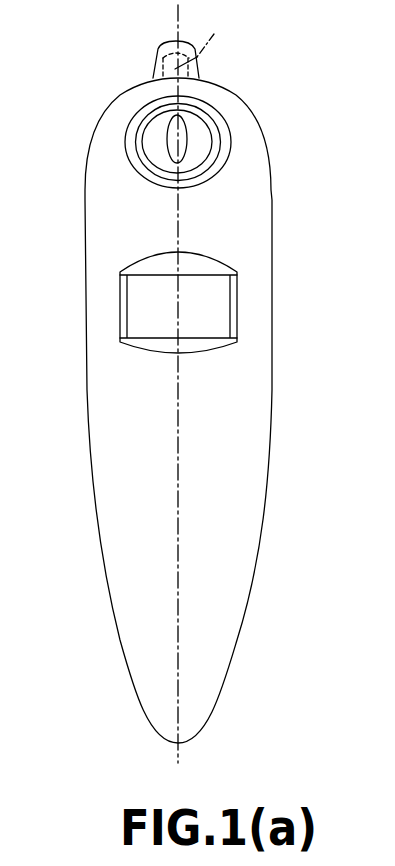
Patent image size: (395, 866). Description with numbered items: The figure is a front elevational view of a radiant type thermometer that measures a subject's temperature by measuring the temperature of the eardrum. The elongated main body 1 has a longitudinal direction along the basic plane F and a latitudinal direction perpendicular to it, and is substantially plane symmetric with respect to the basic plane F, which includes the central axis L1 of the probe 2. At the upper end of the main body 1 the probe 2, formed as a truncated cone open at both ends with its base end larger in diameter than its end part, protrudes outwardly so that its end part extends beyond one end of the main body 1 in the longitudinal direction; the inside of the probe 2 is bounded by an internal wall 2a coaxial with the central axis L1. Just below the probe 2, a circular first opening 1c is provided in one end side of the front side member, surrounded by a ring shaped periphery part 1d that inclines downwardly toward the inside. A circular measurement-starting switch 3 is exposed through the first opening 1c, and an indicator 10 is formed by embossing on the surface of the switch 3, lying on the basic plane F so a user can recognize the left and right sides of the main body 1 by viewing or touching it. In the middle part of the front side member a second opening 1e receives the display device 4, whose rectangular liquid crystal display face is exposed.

The main body 1 is at (258, 256).
The first opening 1c is at (206, 152).
The ring shaped periphery part 1d is at (137, 162).
The second opening 1e is at (155, 283).
The probe 2 is at (199, 68).
The internal wall 2a is at (158, 63).
The switch 3 is at (202, 132).
The display device 4 is at (217, 313).
The indicator 10 is at (168, 137).
The central axis L1 is at (209, 39).
The basic plane F is at (182, 680).